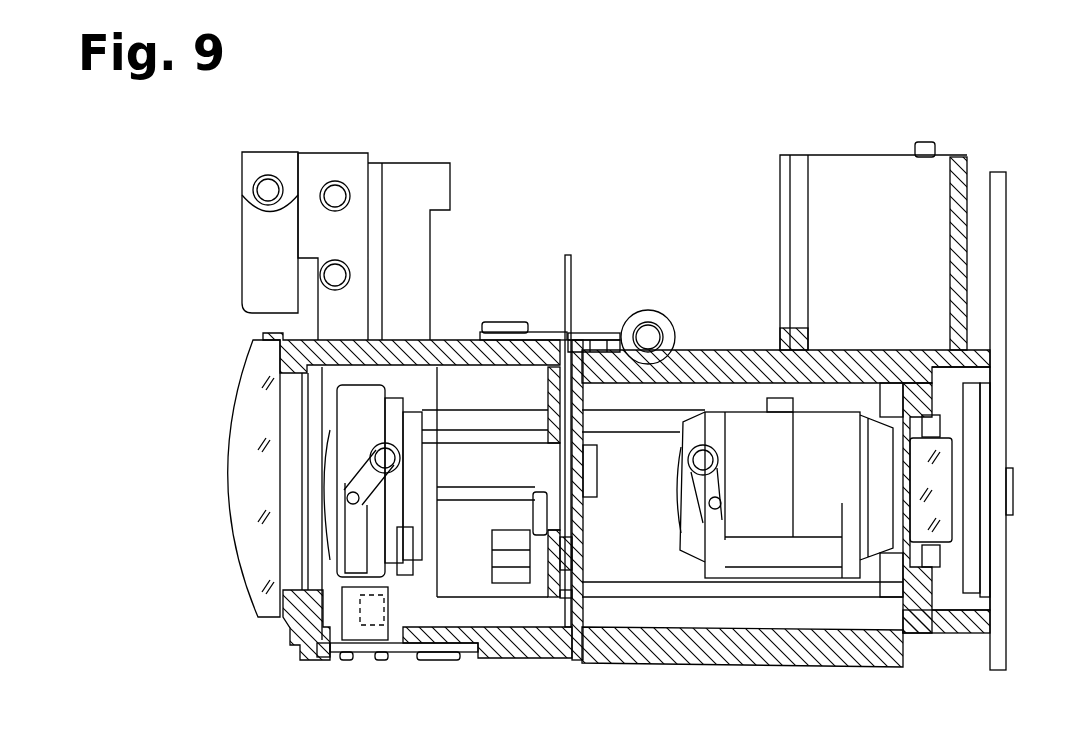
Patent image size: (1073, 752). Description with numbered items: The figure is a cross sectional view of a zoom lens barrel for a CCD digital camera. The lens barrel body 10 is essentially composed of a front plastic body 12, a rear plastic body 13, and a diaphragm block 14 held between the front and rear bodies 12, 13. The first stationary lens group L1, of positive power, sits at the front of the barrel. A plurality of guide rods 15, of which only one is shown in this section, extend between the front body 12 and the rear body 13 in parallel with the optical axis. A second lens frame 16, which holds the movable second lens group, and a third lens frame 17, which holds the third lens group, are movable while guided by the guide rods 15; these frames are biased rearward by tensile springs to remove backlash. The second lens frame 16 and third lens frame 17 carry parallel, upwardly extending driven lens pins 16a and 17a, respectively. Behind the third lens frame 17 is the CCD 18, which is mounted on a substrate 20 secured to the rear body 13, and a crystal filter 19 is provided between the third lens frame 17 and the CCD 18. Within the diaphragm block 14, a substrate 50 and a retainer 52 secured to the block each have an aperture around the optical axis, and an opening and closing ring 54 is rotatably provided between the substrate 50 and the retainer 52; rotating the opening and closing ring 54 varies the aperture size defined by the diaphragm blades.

The lens barrel body 10 is at (170, 226).
The front plastic body 12 is at (553, 652).
The rear plastic body 13 is at (737, 647).
The diaphragm block 14 is at (577, 664).
The guide rods 15 is at (468, 420).
The second lens frame 16 is at (350, 398).
The second lens pin 16a is at (350, 442).
The third lens frame 17 is at (753, 427).
The third lens pin 17a is at (707, 457).
The CCD 18 is at (975, 463).
The crystal filter 19 is at (947, 440).
The substrate 20 is at (995, 633).
The substrate 50 is at (582, 597).
The retainer 52 is at (553, 603).
The opening and closing ring 54 is at (567, 310).
The first stationary lens group L1 is at (248, 537).